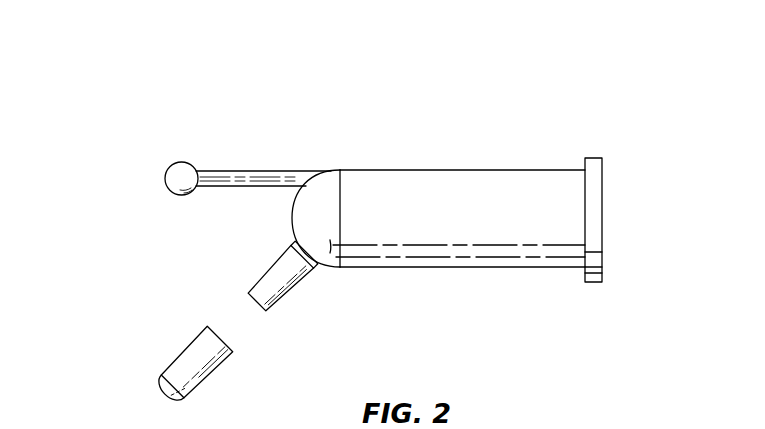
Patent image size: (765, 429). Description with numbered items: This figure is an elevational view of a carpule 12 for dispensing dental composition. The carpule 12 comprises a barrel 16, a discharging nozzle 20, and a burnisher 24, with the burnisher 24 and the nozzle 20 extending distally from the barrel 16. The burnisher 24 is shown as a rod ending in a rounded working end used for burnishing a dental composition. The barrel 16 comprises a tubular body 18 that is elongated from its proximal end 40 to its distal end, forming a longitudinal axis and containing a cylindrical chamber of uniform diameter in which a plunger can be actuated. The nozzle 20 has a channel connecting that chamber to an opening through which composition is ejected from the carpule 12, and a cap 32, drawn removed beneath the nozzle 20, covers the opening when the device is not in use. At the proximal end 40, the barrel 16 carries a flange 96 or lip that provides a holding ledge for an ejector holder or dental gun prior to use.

The carpule 12 is at (90, 208).
The barrel 16 is at (527, 156).
The tubular body 18 is at (515, 253).
The discharging nozzle 20 is at (260, 272).
The burnisher 24 is at (230, 148).
The cap 32 is at (182, 352).
The proximal end 40 is at (602, 262).
The flange 96 is at (595, 158).